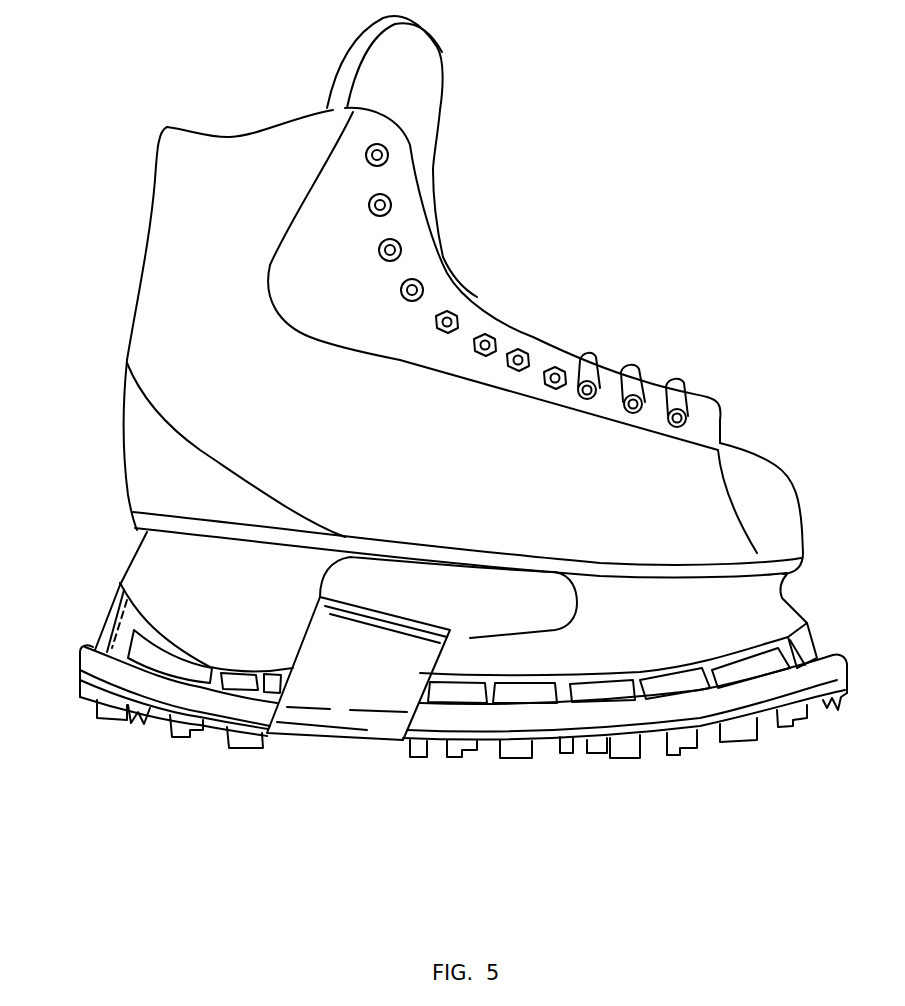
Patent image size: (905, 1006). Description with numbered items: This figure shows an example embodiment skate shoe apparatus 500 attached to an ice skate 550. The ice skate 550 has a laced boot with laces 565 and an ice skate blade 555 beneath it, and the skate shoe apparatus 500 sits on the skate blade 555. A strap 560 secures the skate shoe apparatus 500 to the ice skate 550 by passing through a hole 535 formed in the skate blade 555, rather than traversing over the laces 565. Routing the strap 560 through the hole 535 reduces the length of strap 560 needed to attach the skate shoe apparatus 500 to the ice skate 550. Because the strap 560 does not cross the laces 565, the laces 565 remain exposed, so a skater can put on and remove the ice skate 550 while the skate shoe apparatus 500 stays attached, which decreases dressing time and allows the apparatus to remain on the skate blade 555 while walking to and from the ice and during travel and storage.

The skate shoe apparatus 500 is at (607, 780).
The hole 535 is at (533, 612).
The ice skate 550 is at (197, 343).
The ice skate blade 555 is at (183, 582).
The strap 560 is at (373, 697).
The laces 565 is at (533, 337).